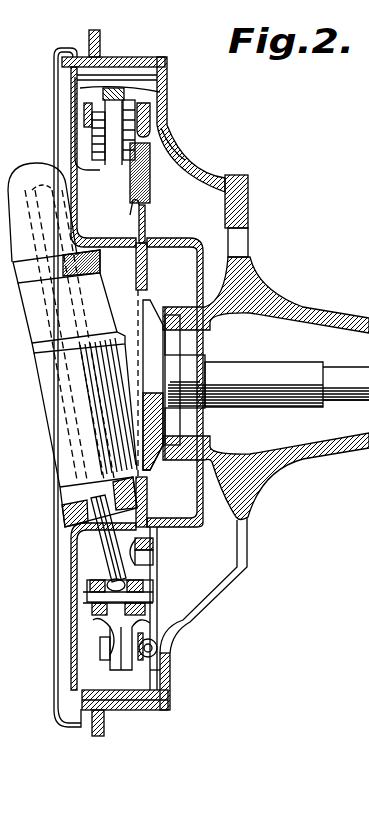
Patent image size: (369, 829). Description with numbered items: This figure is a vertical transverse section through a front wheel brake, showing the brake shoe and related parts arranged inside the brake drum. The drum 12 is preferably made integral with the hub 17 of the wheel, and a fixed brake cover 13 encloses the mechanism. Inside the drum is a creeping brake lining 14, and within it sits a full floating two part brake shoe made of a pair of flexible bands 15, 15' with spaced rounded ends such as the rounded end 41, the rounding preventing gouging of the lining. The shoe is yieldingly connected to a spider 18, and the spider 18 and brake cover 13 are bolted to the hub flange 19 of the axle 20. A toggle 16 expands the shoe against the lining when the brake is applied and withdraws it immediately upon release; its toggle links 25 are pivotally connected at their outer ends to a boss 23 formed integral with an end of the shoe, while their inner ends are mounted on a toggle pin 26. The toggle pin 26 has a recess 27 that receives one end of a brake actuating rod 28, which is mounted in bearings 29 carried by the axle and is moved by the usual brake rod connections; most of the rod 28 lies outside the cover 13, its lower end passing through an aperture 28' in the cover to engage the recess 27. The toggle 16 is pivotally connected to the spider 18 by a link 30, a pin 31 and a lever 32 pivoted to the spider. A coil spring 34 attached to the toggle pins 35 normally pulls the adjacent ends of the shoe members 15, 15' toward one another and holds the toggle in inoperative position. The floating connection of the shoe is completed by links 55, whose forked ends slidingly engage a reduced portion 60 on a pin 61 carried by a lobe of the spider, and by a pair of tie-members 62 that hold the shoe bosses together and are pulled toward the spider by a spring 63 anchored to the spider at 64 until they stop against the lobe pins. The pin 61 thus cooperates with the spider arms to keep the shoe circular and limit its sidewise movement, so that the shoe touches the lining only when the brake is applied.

The drum 12 is at (113, 56).
The fixed brake cover 13 is at (58, 52).
The creeping brake lining 14 is at (168, 67).
The brake shoe member 15 is at (76, 397).
The brake shoe member 15' is at (153, 85).
The toggle 16 is at (100, 624).
The hub 17 is at (305, 306).
The spider 18 is at (165, 238).
The hub flange 19 is at (148, 270).
The axle 20 is at (268, 368).
The boss 23 is at (118, 646).
The toggle links 25 is at (173, 629).
The toggle pin 26 is at (78, 602).
The recess 27 is at (100, 598).
The brake actuating rod 28 is at (74, 502).
The aperture 28' is at (68, 543).
The bearings 29 is at (30, 324).
The link 30 is at (160, 578).
The pin 31 is at (162, 553).
The lever 32 is at (150, 520).
The coil spring 34 is at (172, 670).
The toggle pins 35 is at (158, 650).
The rounded end 41 is at (133, 68).
The links 55 is at (98, 108).
The reduced portion 60 is at (95, 137).
The pin 61 is at (95, 145).
The tie-members 62 is at (166, 104).
The spring 63 is at (173, 132).
The anchor point 64 is at (152, 225).